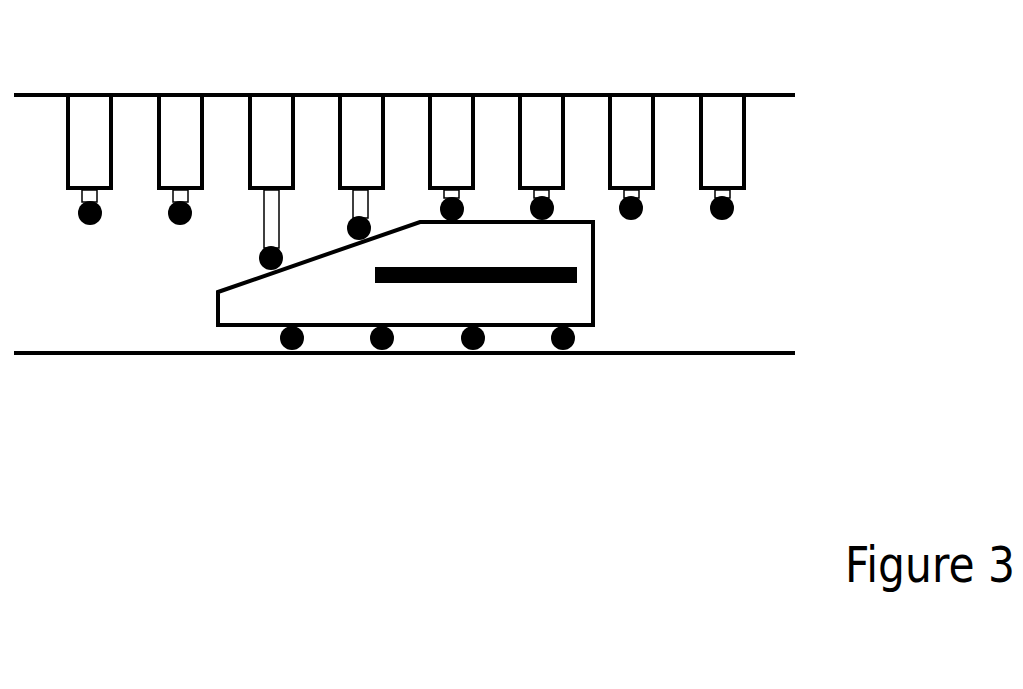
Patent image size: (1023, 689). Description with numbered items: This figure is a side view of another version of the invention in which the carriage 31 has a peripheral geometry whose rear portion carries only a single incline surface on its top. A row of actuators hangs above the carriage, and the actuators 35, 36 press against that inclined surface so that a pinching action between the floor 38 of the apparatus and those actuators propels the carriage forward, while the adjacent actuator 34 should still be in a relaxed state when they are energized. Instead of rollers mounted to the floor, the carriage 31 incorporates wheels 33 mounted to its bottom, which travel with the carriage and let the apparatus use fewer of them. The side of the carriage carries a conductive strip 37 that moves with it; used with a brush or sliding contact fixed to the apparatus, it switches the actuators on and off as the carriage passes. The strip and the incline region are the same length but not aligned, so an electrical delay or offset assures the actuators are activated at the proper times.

The carriage 31 is at (405, 273).
The wheels 33 is at (370, 353).
The actuator 34 is at (448, 115).
The actuator 35 is at (367, 115).
The actuator 36 is at (280, 113).
The conductive strip 37 is at (553, 281).
The floor 38 is at (145, 351).